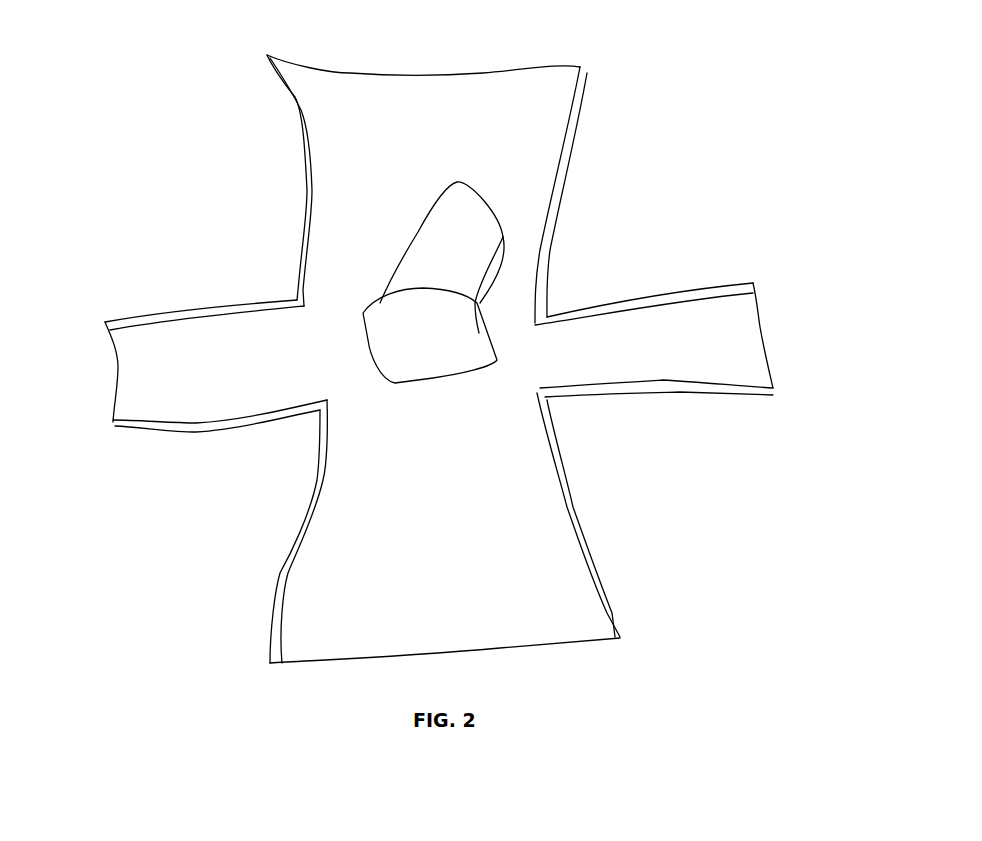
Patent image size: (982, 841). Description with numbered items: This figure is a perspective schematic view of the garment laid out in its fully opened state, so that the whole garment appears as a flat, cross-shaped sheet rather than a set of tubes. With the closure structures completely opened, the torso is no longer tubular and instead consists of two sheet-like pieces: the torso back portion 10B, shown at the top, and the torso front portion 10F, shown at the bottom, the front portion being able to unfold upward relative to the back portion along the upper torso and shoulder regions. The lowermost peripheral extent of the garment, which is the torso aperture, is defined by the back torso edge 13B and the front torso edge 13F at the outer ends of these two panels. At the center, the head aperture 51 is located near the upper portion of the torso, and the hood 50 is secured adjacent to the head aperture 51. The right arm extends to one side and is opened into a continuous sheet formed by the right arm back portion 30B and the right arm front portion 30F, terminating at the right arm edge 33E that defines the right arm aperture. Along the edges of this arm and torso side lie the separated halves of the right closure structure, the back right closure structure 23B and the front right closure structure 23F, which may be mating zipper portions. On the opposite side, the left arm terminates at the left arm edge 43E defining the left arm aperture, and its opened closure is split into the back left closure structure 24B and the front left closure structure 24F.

The torso back portion 10B is at (497, 163).
The torso front portion 10F is at (391, 582).
The back torso edge 13B is at (443, 75).
The front torso edge 13F is at (522, 643).
The back right closure structure 23B is at (143, 318).
The front right closure structure 23F is at (277, 613).
The back left closure structure 24B is at (735, 290).
The front left closure structure 24F is at (677, 387).
The right arm back portion 30B is at (162, 302).
The right arm front portion 30F is at (180, 410).
The right arm edge 33E is at (120, 373).
The left arm edge 43E is at (760, 330).
The hood 50 is at (417, 237).
The head aperture 51 is at (375, 317).